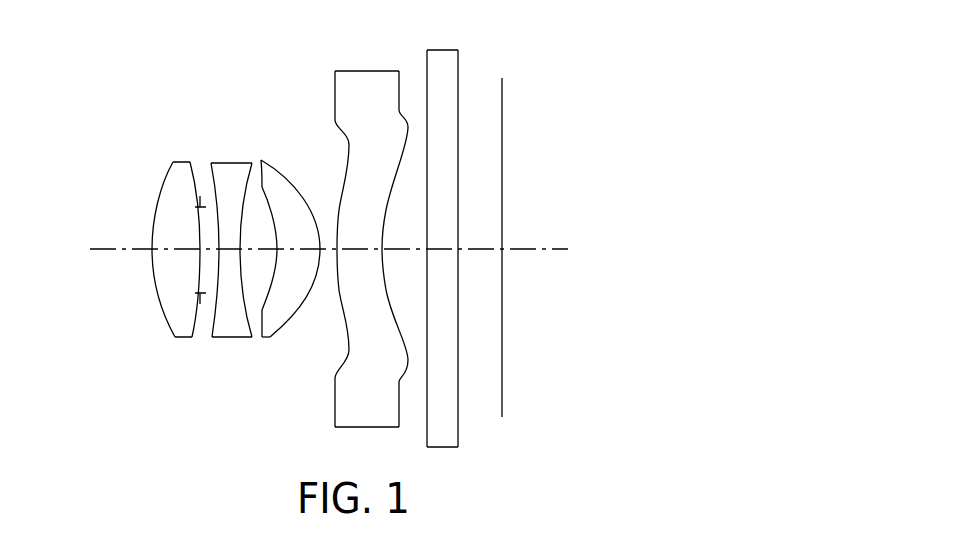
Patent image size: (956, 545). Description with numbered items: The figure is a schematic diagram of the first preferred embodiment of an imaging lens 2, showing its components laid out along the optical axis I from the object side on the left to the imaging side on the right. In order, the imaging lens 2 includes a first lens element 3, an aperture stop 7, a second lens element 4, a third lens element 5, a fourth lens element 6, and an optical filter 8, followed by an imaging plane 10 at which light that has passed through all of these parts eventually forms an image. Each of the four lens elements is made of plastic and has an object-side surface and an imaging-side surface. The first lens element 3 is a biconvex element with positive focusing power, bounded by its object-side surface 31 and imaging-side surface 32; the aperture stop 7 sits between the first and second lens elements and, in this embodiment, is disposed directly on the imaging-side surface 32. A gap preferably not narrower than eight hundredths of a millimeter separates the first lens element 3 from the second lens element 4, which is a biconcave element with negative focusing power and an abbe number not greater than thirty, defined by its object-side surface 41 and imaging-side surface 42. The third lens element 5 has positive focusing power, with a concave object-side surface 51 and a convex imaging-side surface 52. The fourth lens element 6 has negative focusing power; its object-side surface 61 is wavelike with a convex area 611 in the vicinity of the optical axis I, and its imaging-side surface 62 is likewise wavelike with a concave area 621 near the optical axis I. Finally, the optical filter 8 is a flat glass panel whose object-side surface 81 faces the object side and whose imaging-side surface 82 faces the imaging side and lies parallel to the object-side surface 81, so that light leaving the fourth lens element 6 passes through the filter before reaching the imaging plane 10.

The imaging lens 2 is at (292, 126).
The first lens element 3 is at (129, 212).
The object-side surface of first lens element 31 is at (153, 279).
The imaging-side surface of first lens element 32 is at (198, 282).
The second lens element 4 is at (213, 248).
The object-side surface of second lens element 41 is at (220, 277).
The imaging-side surface of second lens element 42 is at (240, 268).
The third lens element 5 is at (285, 256).
The object-side surface of third lens element 51 is at (277, 288).
The imaging-side surface of third lens element 52 is at (314, 284).
The fourth lens element 6 is at (446, 240).
The object-side surface of fourth lens element 61 is at (329, 270).
The convex area 611 is at (337, 246).
The imaging-side surface of fourth lens element 62 is at (483, 249).
The concave area 621 is at (383, 236).
The aperture stop 7 is at (200, 196).
The optical filter 8 is at (502, 250).
The object-side surface of optical filter 81 is at (427, 423).
The imaging-side surface of optical filter 82 is at (459, 395).
The imaging plane 10 is at (503, 113).
The optical axis I is at (538, 248).